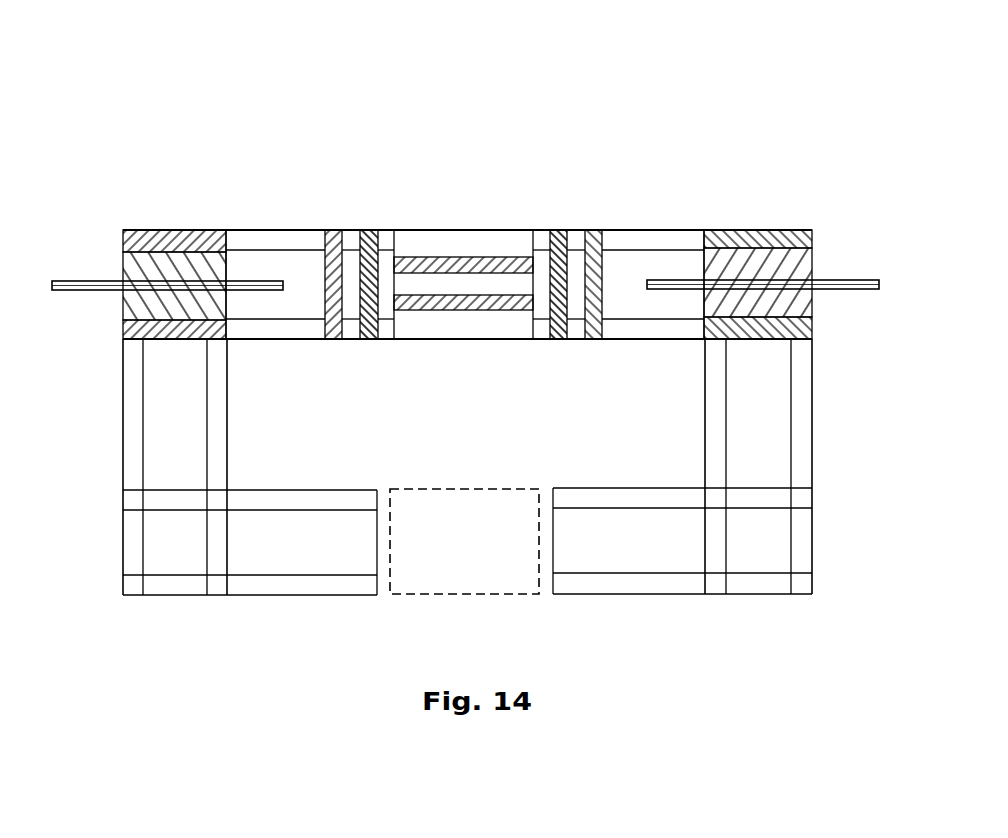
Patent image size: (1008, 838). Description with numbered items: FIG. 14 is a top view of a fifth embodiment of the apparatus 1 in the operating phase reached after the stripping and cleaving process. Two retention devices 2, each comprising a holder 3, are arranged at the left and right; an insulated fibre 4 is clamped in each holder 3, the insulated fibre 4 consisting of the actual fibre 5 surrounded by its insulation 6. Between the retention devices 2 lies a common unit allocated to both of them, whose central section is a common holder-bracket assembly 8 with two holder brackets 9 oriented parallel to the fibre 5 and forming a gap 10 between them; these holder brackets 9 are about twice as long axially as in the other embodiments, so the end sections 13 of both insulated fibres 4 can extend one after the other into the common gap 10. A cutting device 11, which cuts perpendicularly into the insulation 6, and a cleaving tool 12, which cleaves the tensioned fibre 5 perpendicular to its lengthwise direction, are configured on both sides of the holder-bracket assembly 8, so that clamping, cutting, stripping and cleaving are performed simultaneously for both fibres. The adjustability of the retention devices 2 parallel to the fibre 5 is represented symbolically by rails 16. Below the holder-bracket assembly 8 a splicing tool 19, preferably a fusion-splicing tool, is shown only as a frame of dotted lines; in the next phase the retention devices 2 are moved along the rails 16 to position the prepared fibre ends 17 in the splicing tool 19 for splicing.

The apparatus 1 is at (767, 114).
The retention device 2 is at (178, 228).
The holder 3 is at (190, 318).
The insulated fibre 4 is at (72, 278).
The fibre 5 is at (299, 284).
The insulation 6 is at (90, 279).
The holder-bracket assembly 8 is at (438, 236).
The holder brackets 9 is at (522, 256).
The gap 10 is at (463, 288).
The cutting device 11 is at (367, 226).
The cleaving unit 12 is at (333, 341).
The end section 13 is at (476, 285).
The rails 16 is at (773, 495).
The fibre end 17 is at (298, 290).
The splicing tool 19 is at (495, 488).